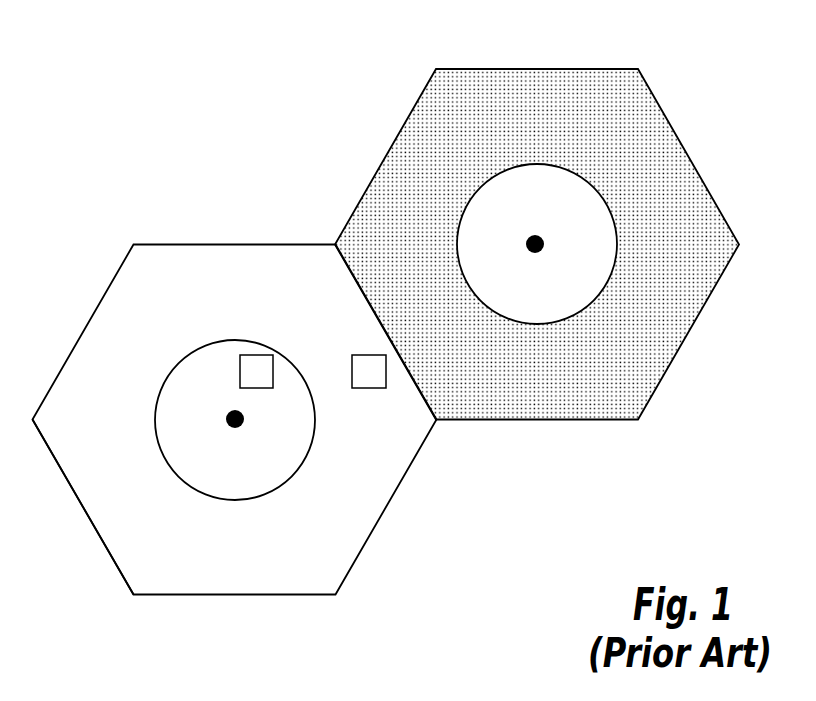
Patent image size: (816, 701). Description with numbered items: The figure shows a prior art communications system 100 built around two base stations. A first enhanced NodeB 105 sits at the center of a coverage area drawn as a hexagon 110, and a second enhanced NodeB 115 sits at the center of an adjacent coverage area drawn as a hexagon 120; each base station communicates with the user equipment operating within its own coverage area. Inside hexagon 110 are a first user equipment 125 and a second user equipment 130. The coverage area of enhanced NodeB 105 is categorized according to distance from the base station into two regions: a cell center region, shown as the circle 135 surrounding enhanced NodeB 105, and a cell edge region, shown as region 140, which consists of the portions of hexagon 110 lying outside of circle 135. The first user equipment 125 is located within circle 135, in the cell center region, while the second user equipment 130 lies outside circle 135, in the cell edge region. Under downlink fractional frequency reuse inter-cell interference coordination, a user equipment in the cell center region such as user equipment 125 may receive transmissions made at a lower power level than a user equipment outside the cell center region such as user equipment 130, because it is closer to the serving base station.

The communications system 100 is at (141, 100).
The first enhanced NodeB (eNB) 105 is at (233, 428).
The hexagon 110 is at (82, 333).
The second eNB 115 is at (535, 253).
The hexagon 120 is at (610, 69).
The first UE 125 is at (257, 355).
The second UE 130 is at (368, 388).
The circle 135 is at (228, 341).
The region 140 is at (113, 535).